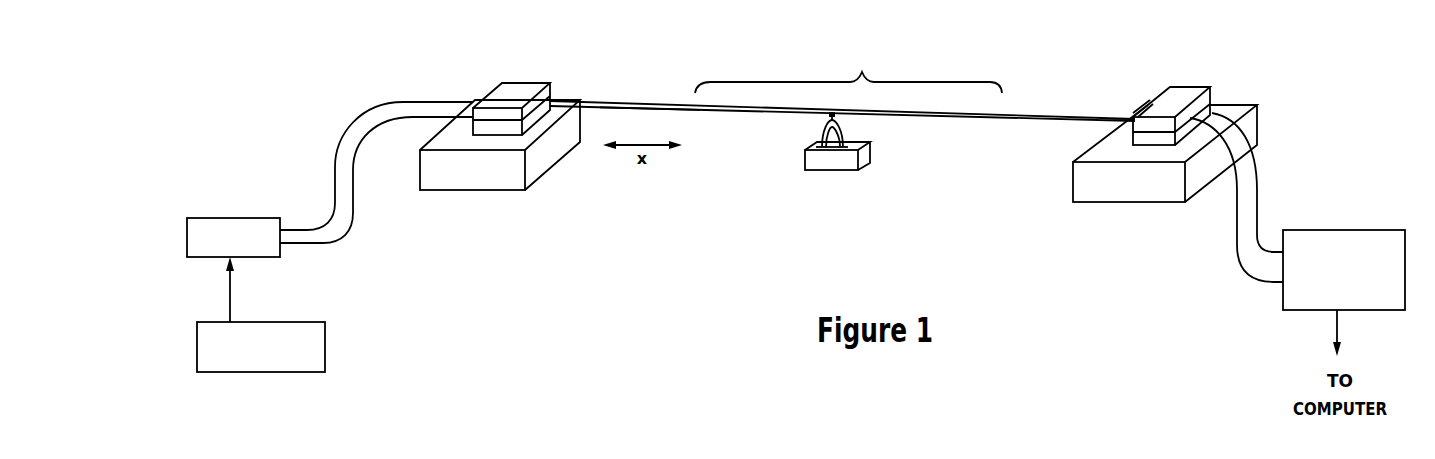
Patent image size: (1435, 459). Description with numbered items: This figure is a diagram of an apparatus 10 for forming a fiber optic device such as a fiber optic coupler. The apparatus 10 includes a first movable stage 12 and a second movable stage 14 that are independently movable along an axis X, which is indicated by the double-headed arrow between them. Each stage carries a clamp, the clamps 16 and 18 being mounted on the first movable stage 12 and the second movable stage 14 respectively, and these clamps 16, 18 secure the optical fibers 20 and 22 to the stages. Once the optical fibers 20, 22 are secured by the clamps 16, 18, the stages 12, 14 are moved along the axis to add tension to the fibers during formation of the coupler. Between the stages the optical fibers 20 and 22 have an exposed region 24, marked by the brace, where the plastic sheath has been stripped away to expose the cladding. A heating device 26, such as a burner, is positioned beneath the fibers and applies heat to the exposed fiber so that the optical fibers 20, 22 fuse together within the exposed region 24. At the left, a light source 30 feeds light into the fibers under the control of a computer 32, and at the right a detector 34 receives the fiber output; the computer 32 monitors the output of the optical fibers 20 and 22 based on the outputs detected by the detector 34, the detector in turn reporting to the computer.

The apparatus 10 is at (698, 264).
The first movable stage 12 is at (481, 178).
The second movable stage 14 is at (1108, 190).
The clamp 16 is at (513, 88).
The clamp 18 is at (1178, 87).
The optical fiber 20 is at (617, 101).
The optical fiber 22 is at (640, 108).
The exposed region 24 is at (871, 58).
The heating device 26 is at (867, 155).
The light source 30 is at (230, 217).
The computer 32 is at (327, 348).
The detector 34 is at (1347, 228).